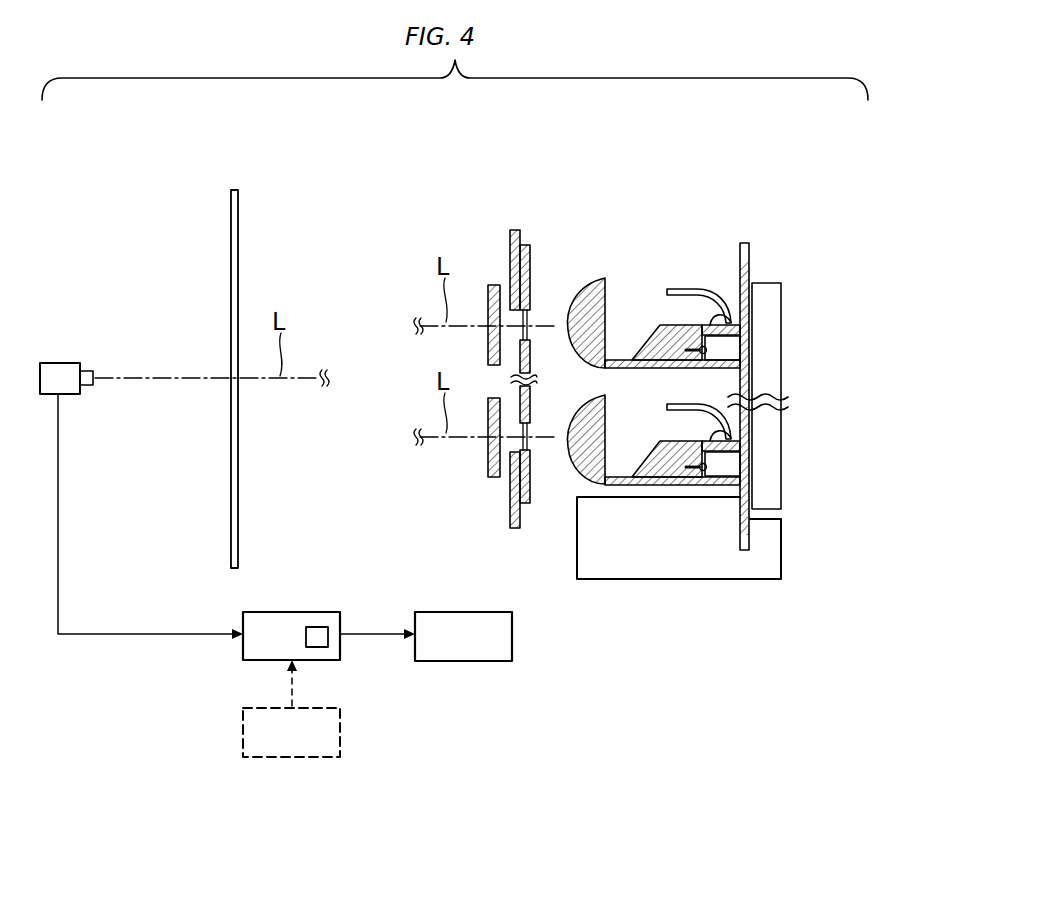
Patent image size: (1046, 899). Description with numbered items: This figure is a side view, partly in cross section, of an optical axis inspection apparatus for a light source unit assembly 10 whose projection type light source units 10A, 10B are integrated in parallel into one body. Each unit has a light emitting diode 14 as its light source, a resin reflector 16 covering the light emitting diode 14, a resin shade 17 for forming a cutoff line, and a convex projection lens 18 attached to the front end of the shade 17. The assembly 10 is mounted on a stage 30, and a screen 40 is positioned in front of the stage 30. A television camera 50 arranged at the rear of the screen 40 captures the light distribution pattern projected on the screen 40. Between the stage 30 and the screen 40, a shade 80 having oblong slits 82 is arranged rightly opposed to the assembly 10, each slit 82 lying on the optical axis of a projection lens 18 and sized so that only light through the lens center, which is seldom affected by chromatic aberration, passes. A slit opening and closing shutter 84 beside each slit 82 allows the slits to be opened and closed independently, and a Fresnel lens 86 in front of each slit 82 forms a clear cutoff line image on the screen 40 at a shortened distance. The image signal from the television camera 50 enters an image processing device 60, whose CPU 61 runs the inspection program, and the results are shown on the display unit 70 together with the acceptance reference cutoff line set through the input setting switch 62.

The light source unit assembly 10 is at (713, 339).
The projection type light source unit 10A is at (712, 396).
The projection type light source unit 10B is at (702, 331).
The light emitting diode 14 is at (732, 317).
The reflector 16 is at (676, 289).
The shade 17 is at (662, 324).
The convex projection lens 18 is at (604, 300).
The stage 30 is at (783, 552).
The screen 40 is at (234, 190).
The television camera 50 is at (62, 363).
The image processing device 60 is at (265, 612).
The CPU 61 is at (317, 627).
The input setting switch 62 is at (343, 727).
The display unit 70 is at (512, 634).
The shade 80 is at (510, 375).
The oblong slit 82 is at (530, 326).
The slit opening and closing shutter 84 is at (515, 230).
The Fresnel lens 86 is at (494, 285).